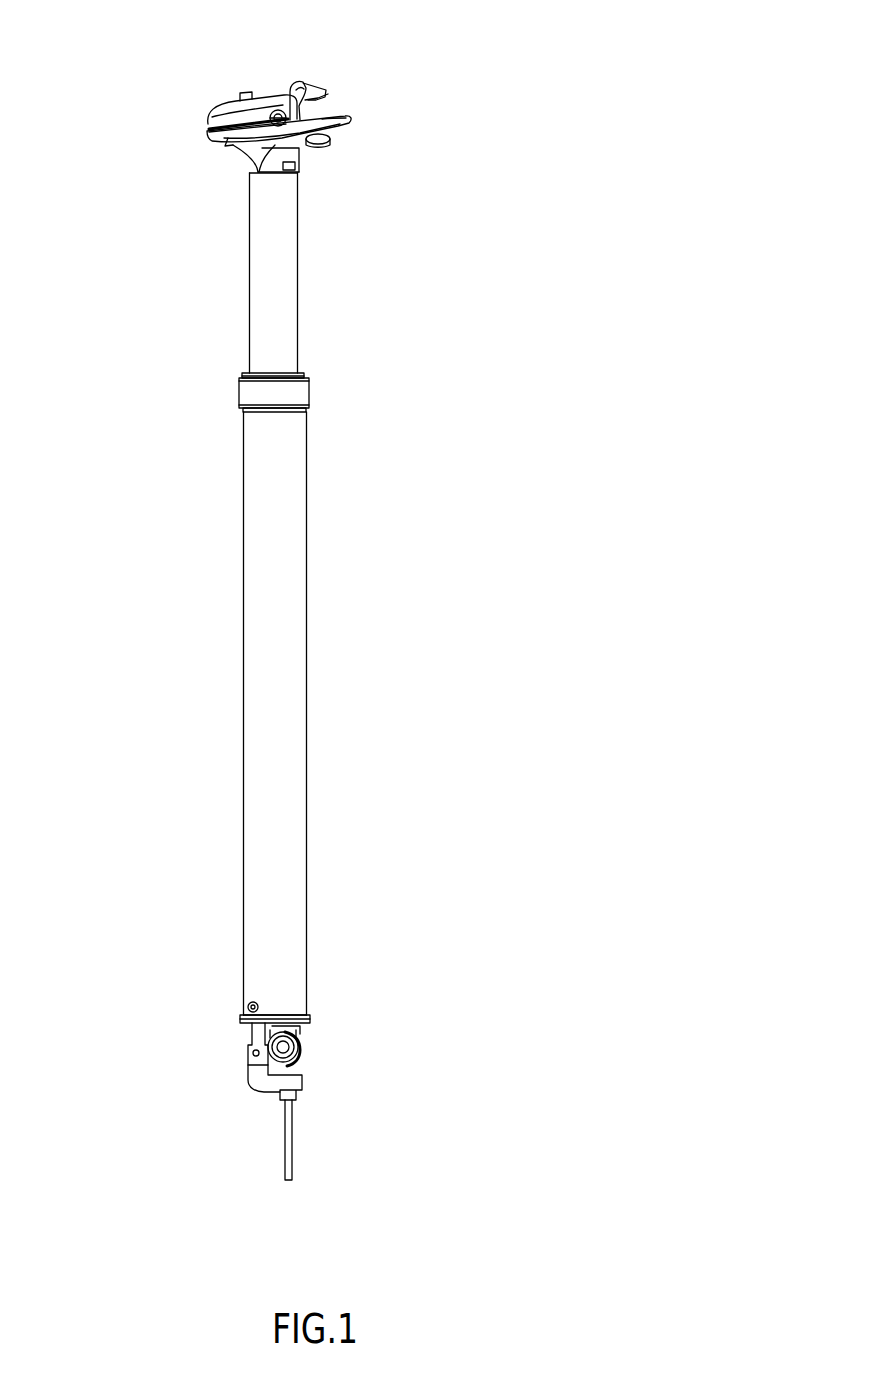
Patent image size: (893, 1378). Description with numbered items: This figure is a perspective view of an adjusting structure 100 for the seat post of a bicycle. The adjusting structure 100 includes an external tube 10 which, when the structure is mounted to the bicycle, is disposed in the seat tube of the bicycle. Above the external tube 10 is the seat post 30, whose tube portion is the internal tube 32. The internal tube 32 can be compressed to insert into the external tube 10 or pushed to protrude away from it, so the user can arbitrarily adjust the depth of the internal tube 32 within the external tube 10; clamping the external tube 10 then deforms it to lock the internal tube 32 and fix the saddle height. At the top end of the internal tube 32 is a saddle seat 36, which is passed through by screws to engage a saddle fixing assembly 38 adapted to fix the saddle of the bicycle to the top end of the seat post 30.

The adjusting structure 100 is at (381, 76).
The external tube 10 is at (330, 619).
The seat post 30 is at (351, 345).
The internal tube 32 is at (282, 225).
The saddle seat 36 is at (293, 153).
The saddle fixing assembly 38 is at (204, 108).